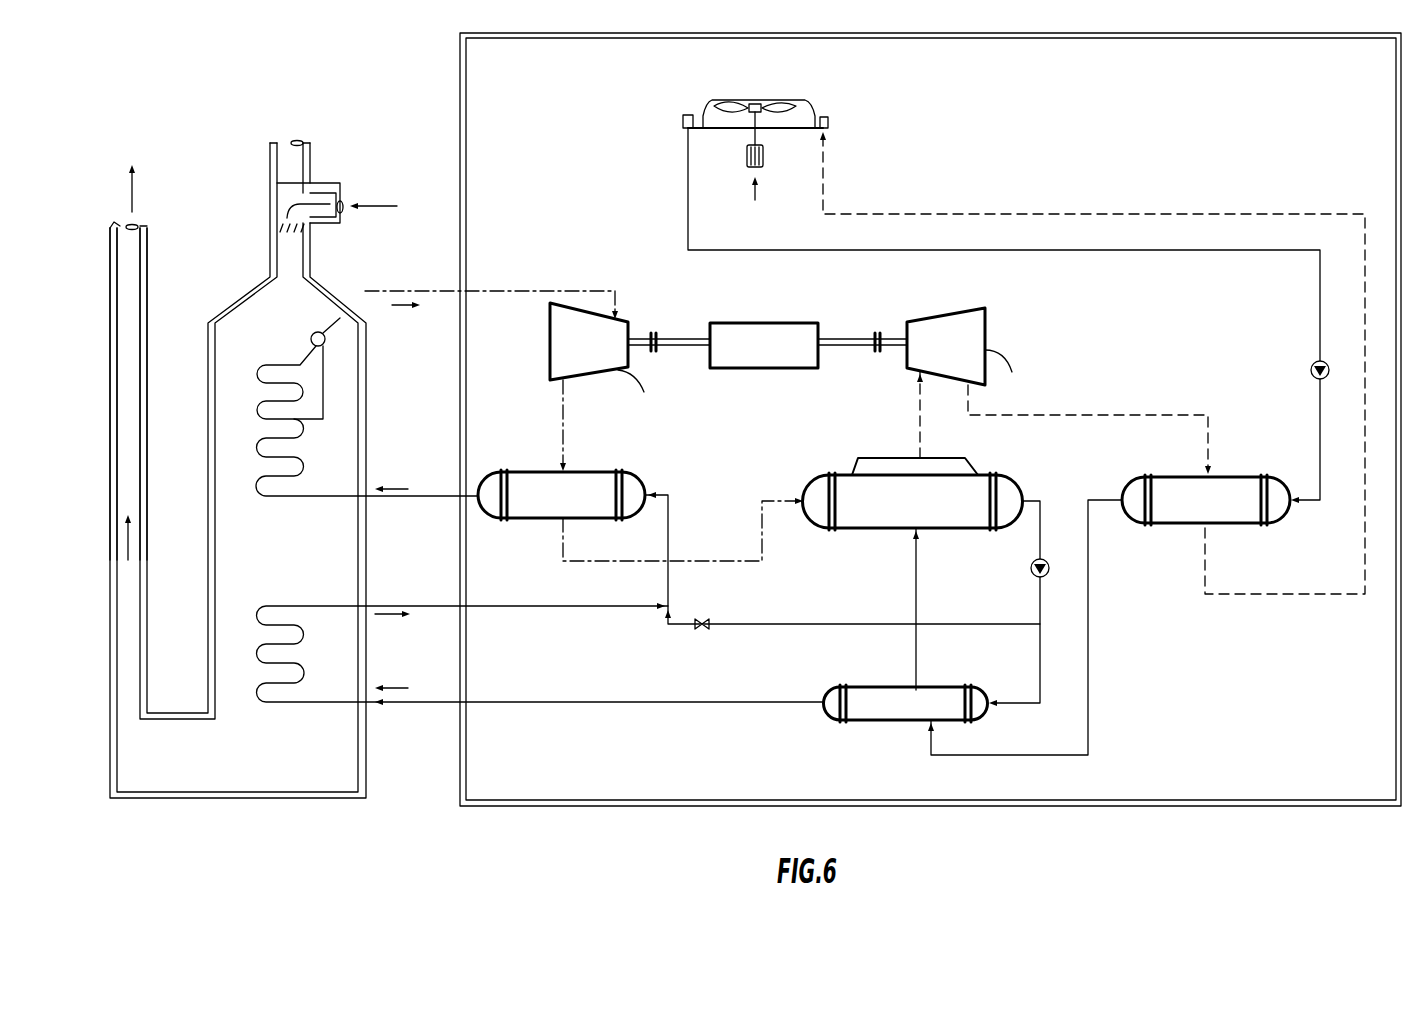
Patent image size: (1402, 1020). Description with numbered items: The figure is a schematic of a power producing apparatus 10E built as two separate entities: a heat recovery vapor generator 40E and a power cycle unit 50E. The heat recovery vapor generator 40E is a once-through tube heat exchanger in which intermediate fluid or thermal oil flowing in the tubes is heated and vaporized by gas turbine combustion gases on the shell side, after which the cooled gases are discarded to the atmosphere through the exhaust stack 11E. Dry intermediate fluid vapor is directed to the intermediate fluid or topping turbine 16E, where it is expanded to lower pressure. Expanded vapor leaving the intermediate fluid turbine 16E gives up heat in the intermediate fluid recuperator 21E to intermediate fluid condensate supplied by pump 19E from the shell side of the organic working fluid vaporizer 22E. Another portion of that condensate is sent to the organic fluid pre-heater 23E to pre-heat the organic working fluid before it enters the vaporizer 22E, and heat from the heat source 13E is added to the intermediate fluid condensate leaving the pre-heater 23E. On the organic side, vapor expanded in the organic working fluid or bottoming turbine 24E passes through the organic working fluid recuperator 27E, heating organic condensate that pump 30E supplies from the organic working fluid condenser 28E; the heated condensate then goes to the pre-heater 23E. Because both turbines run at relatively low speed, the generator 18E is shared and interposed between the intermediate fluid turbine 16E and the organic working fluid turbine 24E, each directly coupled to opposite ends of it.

The power producing apparatus embodiment 10E is at (148, 72).
The exhaust stack 11E is at (150, 238).
The heat source 13E is at (349, 303).
The intermediate fluid turbine 16E is at (550, 307).
The generator 18E is at (818, 368).
The pump 19E is at (1048, 562).
The intermediate fluid recuperator 21E is at (609, 474).
The organic working fluid vaporizer 22E is at (850, 473).
The organic fluid pre-heater 23E is at (935, 688).
The organic working fluid turbine 24E is at (983, 308).
The organic working fluid recuperator 27E is at (1227, 477).
The organic working fluid condenser 28E is at (822, 120).
The pump 30E is at (1327, 366).
The heat recovery vapor generator 40E is at (367, 792).
The power cycle unit 50E is at (1212, 806).